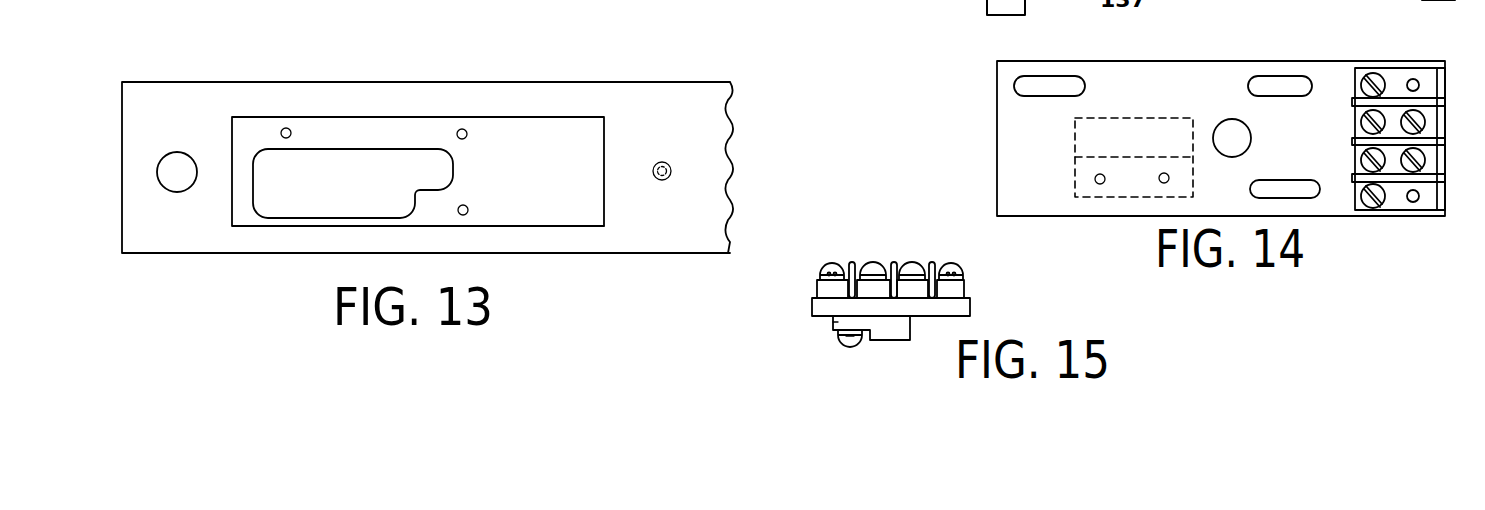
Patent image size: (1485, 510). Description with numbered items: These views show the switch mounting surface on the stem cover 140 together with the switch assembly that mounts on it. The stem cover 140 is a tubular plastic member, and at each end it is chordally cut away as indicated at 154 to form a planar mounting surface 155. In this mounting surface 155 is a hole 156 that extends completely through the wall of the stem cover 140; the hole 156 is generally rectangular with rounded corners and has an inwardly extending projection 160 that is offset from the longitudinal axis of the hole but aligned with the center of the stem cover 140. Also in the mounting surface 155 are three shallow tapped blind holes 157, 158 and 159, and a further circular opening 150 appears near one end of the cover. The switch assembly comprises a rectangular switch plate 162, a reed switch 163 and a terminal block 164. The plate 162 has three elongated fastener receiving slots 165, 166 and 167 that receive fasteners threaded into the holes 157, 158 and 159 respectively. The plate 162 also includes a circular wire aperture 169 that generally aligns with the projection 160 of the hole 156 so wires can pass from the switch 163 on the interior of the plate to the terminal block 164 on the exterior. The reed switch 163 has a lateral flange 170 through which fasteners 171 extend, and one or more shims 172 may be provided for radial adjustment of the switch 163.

In FIG. 13, the stem cover 140 is at (527, 82).
In FIG. 13, the mounting hole 150 is at (180, 152).
In FIG. 13, the chordal cut-away 154 is at (587, 234).
In FIG. 13, the planar mounting surface 155 is at (570, 128).
In FIG. 13, the hole 156 is at (311, 219).
In FIG. 13, the shallow tapped blind hole 157 is at (288, 128).
In FIG. 13, the shallow tapped blind hole 158 is at (463, 129).
In FIG. 13, the shallow tapped blind hole 159 is at (467, 214).
In FIG. 13, the inwardly extending projection 160 is at (455, 173).
In FIG. 14, the switch plate 162 is at (997, 138).
In FIG. 15, the switch plate 162 is at (970, 306).
In FIG. 14, the reed switch 163 is at (1121, 140).
In FIG. 15, the reed switch 163 is at (886, 342).
In FIG. 14, the terminal block 164 is at (1397, 68).
In FIG. 15, the terminal block 164 is at (978, 279).
In FIG. 14, the elongated fastener receiving slot 165 is at (1050, 76).
In FIG. 14, the elongated fastener receiving slot 166 is at (1290, 76).
In FIG. 14, the elongated fastener receiving slot 167 is at (1285, 198).
In FIG. 14, the circular wire aperture 169 is at (1252, 136).
In FIG. 14, the lateral flange 170 is at (1143, 187).
In FIG. 15, the lateral flange 170 is at (842, 338).
In FIG. 14, the fastener 171 is at (1098, 184).
In FIG. 15, the fastener 171 is at (851, 347).
In FIG. 15, the shim 172 is at (833, 322).